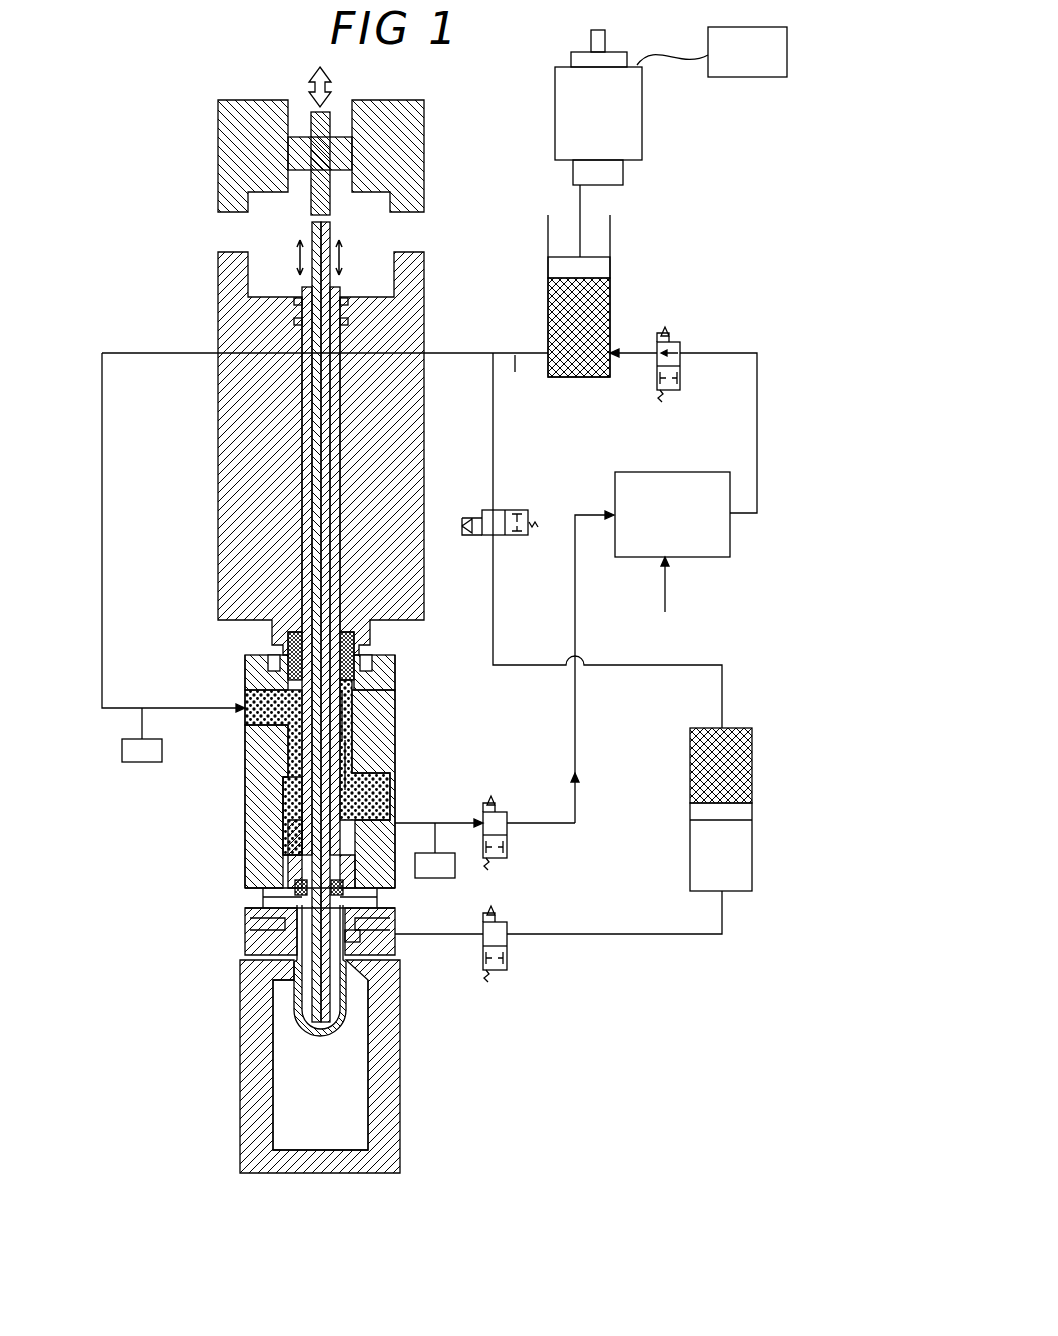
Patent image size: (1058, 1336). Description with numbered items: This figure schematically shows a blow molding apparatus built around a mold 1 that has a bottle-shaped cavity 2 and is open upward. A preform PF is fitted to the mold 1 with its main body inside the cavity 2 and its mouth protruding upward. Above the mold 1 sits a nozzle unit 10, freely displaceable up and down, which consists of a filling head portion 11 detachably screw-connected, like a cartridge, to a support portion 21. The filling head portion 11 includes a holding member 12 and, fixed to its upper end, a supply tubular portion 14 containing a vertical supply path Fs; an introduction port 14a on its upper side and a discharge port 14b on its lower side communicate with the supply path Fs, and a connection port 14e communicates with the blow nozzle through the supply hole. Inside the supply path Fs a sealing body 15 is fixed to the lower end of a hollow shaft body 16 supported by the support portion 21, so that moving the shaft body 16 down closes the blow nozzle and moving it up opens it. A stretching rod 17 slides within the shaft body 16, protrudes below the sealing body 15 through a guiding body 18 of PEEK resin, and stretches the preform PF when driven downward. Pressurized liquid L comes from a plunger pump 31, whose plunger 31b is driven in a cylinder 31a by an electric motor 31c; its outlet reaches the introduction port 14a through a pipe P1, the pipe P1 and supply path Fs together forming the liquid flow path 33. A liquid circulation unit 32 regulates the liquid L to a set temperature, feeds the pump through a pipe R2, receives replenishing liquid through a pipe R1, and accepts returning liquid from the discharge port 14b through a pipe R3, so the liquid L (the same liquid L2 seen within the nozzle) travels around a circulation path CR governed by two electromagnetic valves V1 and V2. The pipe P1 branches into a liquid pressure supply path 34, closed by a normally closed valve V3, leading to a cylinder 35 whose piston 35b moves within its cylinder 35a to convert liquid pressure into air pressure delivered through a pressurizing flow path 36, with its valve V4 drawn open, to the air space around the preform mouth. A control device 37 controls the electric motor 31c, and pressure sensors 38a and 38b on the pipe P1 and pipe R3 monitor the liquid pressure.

The nozzle unit 10 is at (190, 207).
The mold 1 is at (378, 1112).
The cavity 2 is at (365, 1140).
The filling head portion 11 is at (397, 766).
The holding member 12 is at (245, 937).
The supply tubular portion 14 is at (245, 843).
The introduction port 14a is at (245, 700).
The discharge port 14b is at (390, 815).
The connection port 14e is at (245, 897).
The sealing body 15 is at (262, 812).
The shaft body 16 is at (305, 468).
The stretching rod 17 is at (318, 512).
The guiding body 18 is at (385, 902).
The support portion 21 is at (424, 418).
The plunger pump 31 is at (606, 281).
The cylinder 31a is at (612, 242).
The plunger 31b is at (600, 268).
The electric motor 31c is at (640, 115).
The liquid circulation unit 32 is at (705, 560).
The liquid flow path 33 is at (462, 350).
The liquid pressure supply path 34 is at (493, 480).
The cylinder used for conversion to air for the outside of the mouth 35 is at (757, 807).
The cylinder 35a is at (755, 745).
The piston 35b is at (745, 815).
The pressurizing flow path 36 is at (640, 934).
The control device 37 is at (752, 78).
The pressure sensor 38a is at (140, 762).
The pressure sensor 38b is at (452, 865).
The opening-closing valve of the circulation path V1 is at (680, 385).
The opening-closing valve of the circulation path V2 is at (507, 843).
The opening-closing valve of the conversion cylinder V3 is at (522, 510).
The opening-closing valve for pressurizing air outside the mouth V4 is at (507, 953).
The liquid L is at (572, 305).
The liquid in nozzle L2 is at (352, 690).
The supply path Fs is at (345, 760).
The preform PF is at (347, 1000).
The pipe P1 is at (524, 379).
The pipe R1 is at (668, 598).
The pipe R2 is at (757, 425).
The pipe R3 is at (578, 738).
The circulation path CR is at (580, 776).